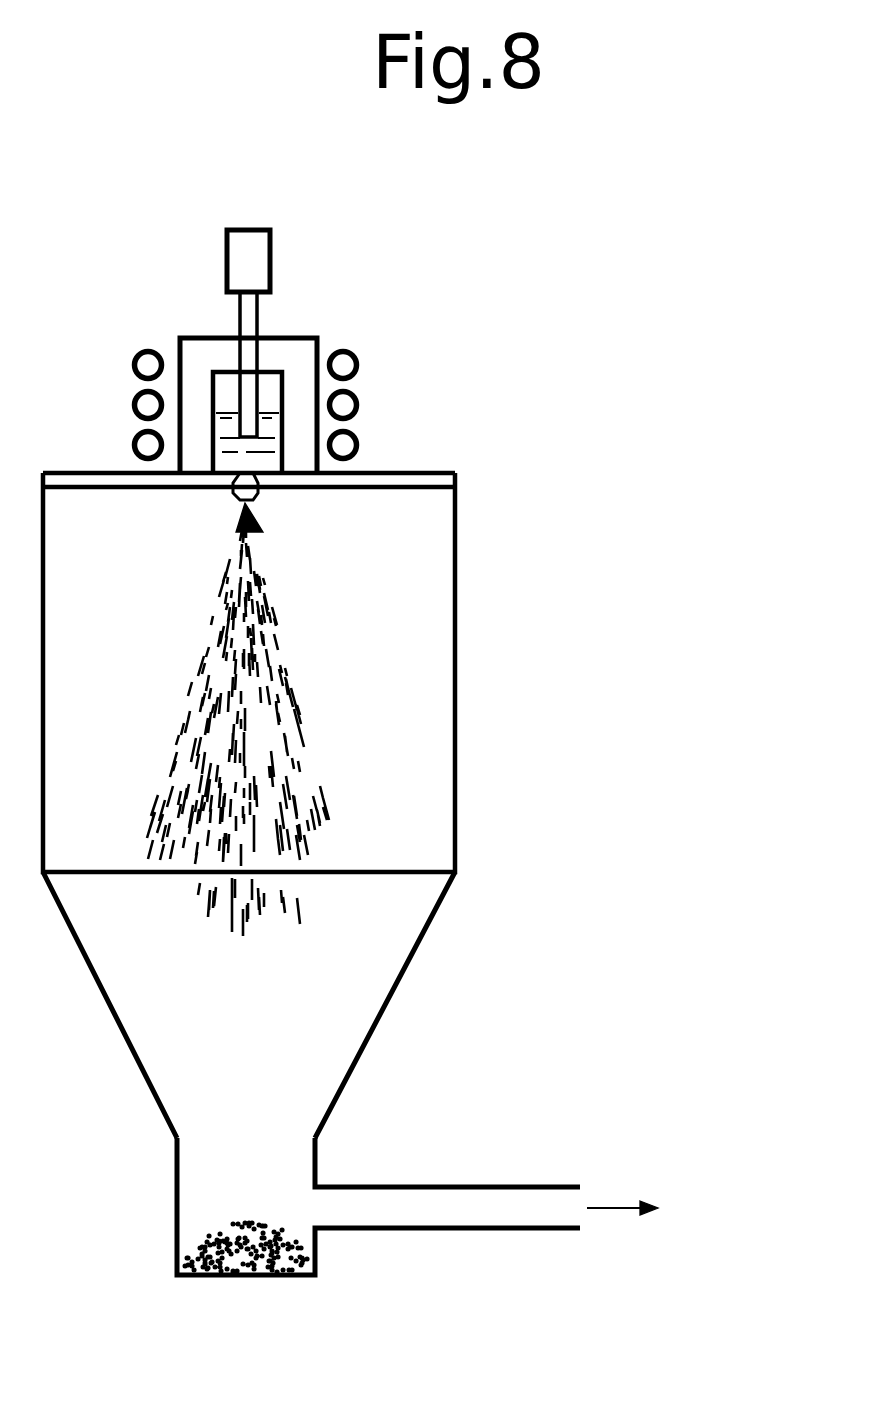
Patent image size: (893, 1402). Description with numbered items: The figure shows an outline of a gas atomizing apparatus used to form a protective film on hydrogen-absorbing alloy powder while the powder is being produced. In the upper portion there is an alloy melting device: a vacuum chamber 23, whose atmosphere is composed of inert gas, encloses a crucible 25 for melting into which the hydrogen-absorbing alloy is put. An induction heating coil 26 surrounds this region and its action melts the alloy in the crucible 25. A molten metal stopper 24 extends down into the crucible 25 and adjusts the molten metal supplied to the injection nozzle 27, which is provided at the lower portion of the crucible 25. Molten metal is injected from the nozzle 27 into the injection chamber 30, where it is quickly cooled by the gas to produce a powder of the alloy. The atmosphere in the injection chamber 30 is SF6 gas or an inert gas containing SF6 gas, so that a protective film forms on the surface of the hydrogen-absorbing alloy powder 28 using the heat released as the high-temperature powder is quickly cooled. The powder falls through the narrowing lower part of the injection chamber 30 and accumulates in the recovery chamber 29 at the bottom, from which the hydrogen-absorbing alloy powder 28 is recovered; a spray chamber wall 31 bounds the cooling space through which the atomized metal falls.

The vacuum chamber 23 is at (205, 338).
The molten metal stopper 24 is at (270, 257).
The crucible for melting 25 is at (267, 372).
The induction heating coil 26 is at (357, 405).
The injection nozzle 27 is at (258, 495).
The hydrogen-absorbing alloy powder 28 is at (255, 1220).
The recovery chamber 29 is at (232, 1182).
The injection chamber 30 is at (358, 950).
The spray chamber 31 is at (423, 552).